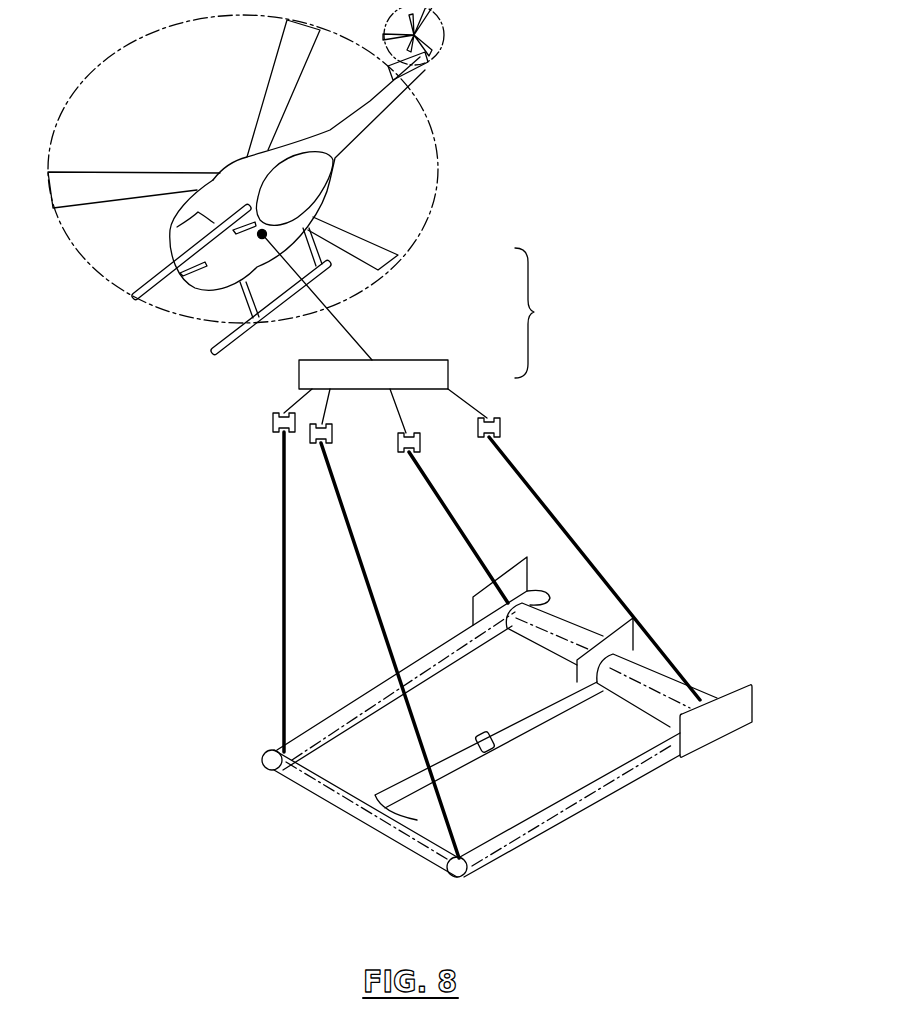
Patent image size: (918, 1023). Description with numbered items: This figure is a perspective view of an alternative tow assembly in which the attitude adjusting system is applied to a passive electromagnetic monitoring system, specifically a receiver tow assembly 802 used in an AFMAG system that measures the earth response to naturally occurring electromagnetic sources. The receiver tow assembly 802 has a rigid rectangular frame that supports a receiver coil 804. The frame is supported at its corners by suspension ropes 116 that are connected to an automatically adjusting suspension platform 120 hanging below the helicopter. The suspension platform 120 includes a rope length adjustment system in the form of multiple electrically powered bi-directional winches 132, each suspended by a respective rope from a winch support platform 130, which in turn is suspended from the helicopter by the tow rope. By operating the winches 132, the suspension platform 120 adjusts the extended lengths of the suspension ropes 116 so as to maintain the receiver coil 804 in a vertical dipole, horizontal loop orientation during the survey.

The suspension ropes 116 is at (282, 538).
The suspension platform 120 is at (551, 313).
The winch support platform 130 is at (408, 372).
The winches 132 is at (273, 422).
The receiver tow assembly 802 is at (633, 775).
The receiver coil 804 is at (502, 840).